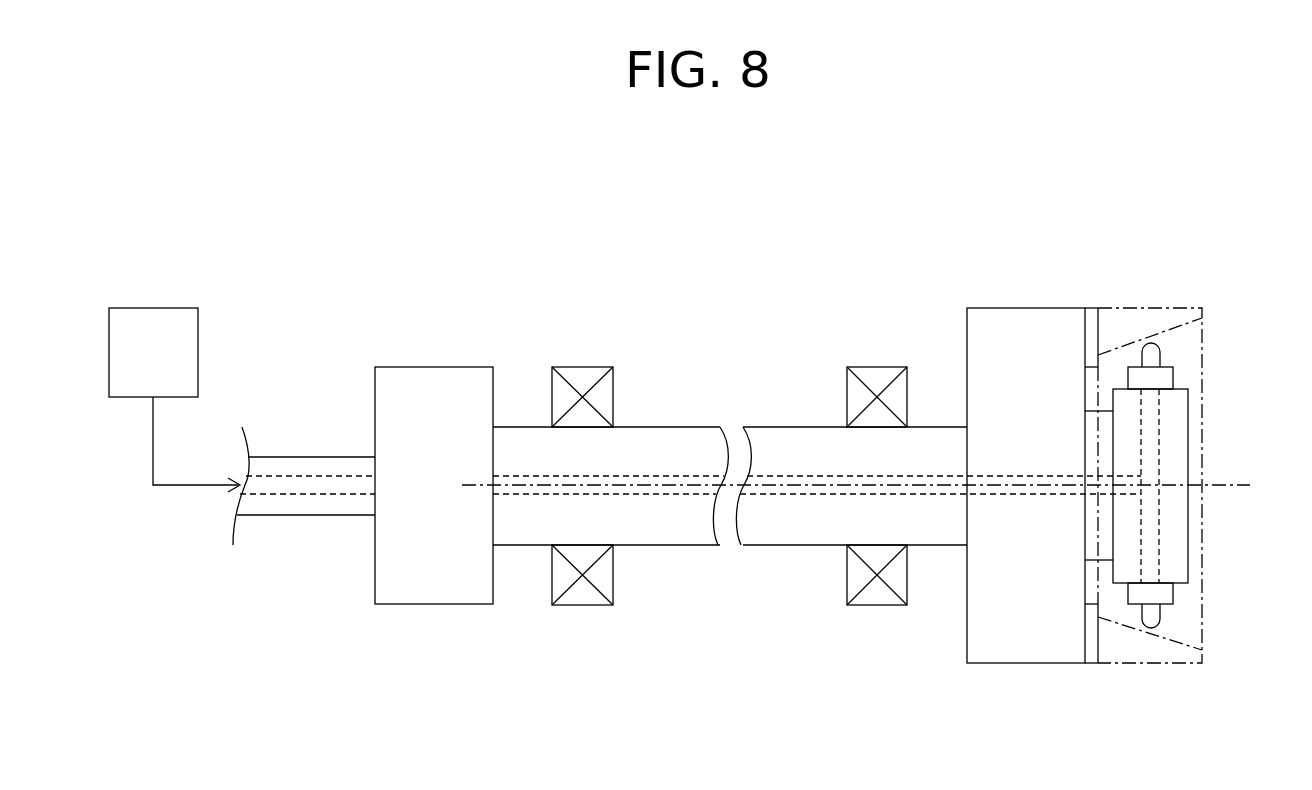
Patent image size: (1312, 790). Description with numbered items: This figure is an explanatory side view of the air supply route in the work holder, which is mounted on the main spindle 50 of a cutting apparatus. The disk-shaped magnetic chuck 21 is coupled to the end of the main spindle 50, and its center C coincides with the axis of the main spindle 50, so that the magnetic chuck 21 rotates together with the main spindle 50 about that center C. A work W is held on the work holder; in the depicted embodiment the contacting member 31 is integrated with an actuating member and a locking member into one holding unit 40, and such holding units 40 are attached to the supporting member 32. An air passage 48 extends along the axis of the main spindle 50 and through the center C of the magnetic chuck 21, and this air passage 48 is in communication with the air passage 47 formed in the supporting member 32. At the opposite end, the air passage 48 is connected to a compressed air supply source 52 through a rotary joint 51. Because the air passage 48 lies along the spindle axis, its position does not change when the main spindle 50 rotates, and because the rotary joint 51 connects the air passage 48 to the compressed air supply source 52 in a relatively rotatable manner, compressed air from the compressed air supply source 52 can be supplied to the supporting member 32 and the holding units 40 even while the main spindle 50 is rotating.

The magnetic chuck 21 is at (1028, 308).
The contacting member 31 is at (1160, 352).
The supporting member 32 is at (1188, 409).
The holding unit 40 is at (1177, 371).
The air passage 47 is at (1213, 486).
The air passage 48 is at (770, 497).
The main spindle 50 is at (782, 427).
The rotary joint 51 is at (436, 367).
The compressed air supply source 52 is at (148, 308).
The work W is at (1150, 308).
The center C is at (1225, 487).